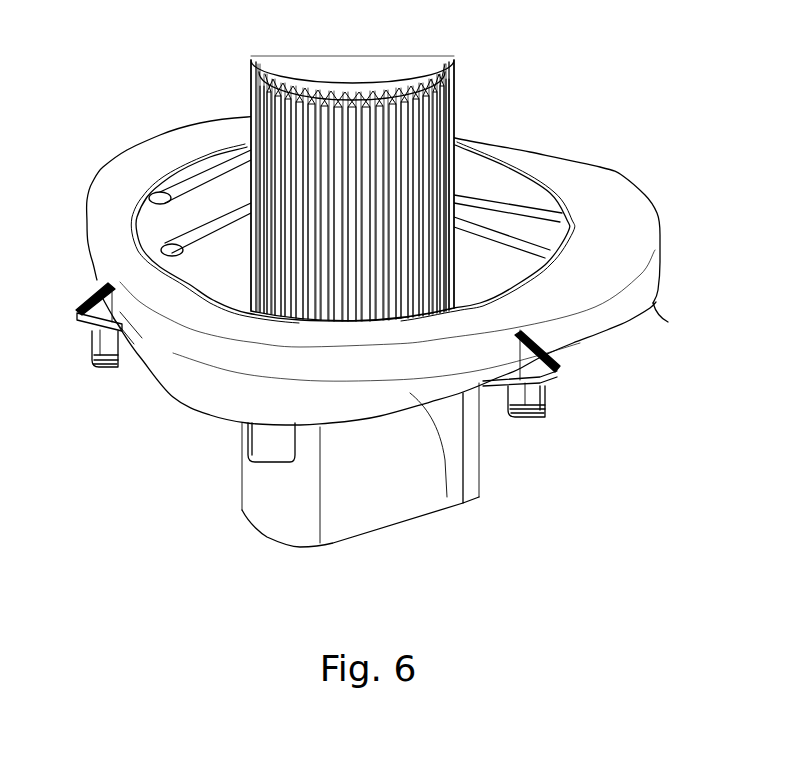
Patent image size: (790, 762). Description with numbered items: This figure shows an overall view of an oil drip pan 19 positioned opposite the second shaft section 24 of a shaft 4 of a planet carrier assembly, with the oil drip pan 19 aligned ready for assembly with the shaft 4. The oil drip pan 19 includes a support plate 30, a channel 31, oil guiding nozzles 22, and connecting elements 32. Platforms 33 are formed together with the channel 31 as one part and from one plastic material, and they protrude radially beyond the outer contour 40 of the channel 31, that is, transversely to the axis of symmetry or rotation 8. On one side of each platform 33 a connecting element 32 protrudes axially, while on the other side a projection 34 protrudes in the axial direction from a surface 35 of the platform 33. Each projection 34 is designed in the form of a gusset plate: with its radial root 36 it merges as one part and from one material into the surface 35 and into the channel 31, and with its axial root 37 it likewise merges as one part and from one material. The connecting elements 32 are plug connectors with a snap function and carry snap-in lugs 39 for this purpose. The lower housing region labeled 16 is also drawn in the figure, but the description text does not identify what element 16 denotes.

The shaft 4 is at (267, 513).
The axis of symmetry or rotation 8 is at (350, 507).
The housing body 16 is at (393, 492).
The oil drip pan 19 is at (610, 212).
The oil guiding nozzles 22 is at (177, 253).
The second shaft section 24 is at (410, 58).
The support plate 30 is at (503, 210).
The channel 31 is at (207, 155).
The connecting elements 32 is at (100, 353).
The platforms 33 is at (84, 340).
The projection 34 is at (95, 298).
The surface 35 is at (137, 347).
The radial root 36 is at (103, 287).
The axial root 37 is at (90, 345).
The snap-in lugs 39 is at (96, 370).
The outer contour 40 is at (450, 503).